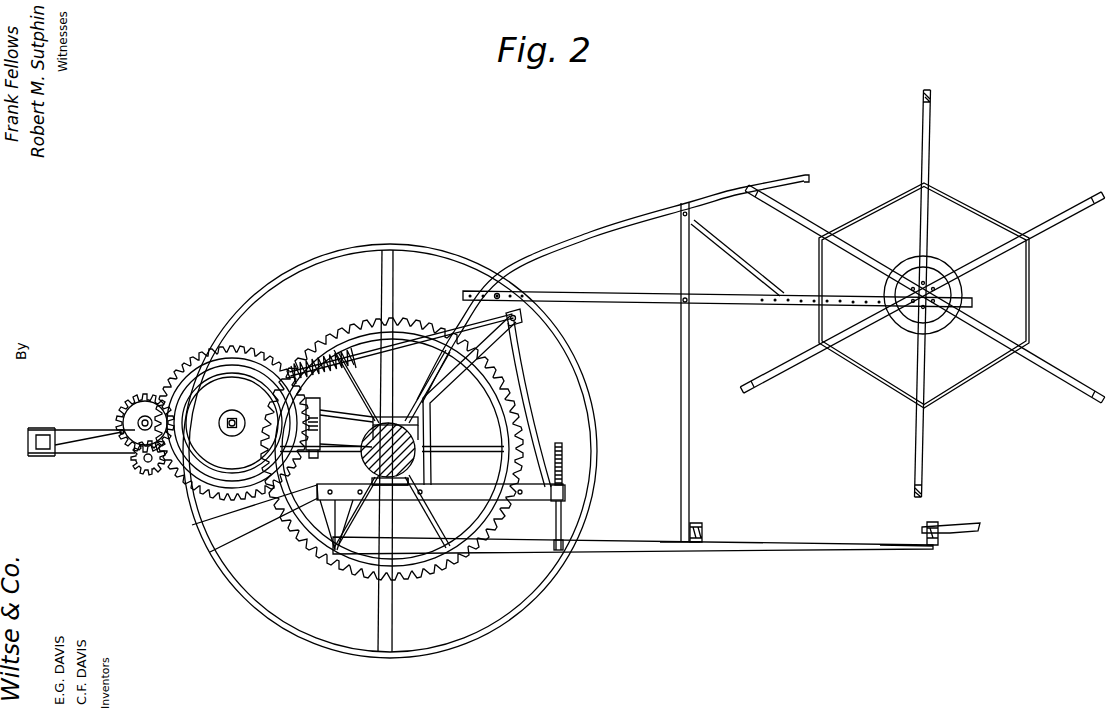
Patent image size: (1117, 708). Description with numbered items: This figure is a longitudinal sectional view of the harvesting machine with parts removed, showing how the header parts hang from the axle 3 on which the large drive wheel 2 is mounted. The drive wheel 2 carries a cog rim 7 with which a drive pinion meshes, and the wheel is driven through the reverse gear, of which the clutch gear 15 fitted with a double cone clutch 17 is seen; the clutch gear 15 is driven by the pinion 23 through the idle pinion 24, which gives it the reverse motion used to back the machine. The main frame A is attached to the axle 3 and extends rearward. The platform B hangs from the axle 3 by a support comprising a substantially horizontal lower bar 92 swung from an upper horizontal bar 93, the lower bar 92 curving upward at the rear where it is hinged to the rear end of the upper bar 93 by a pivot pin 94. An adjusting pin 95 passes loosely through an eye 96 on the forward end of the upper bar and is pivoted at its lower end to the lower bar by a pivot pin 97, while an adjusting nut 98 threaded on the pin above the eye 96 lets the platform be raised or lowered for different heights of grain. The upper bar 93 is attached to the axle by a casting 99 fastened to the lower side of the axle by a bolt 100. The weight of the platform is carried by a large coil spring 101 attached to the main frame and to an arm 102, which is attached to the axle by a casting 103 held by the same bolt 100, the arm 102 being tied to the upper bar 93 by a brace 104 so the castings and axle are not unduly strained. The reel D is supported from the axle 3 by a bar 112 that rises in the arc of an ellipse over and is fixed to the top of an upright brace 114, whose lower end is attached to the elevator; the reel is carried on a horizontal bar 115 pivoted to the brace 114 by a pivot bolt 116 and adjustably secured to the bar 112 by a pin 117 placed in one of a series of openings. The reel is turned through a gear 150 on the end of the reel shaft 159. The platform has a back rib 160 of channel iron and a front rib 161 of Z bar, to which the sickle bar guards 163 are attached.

The drive wheel 2 is at (351, 247).
The axle 3 is at (415, 447).
The cog rim 7 is at (425, 322).
The clutch gear 15 is at (200, 353).
The double cone clutch 17 is at (247, 452).
The pinion 23 is at (131, 395).
The idle pinion 24 is at (152, 476).
The main frame A is at (104, 454).
The platform B is at (848, 549).
The reel D is at (1066, 386).
The horizontal bar 92 is at (666, 552).
The upper horizontal bar 93 is at (488, 473).
The pivot pin 94 is at (322, 492).
The adjusting pin 95 is at (563, 453).
The eye 96 is at (566, 496).
The pivot pin 97 is at (560, 556).
The adjusting nut 98 is at (566, 490).
The casting 99 is at (388, 484).
The bolt 100 is at (387, 396).
The coil spring 101 is at (292, 354).
The arm 102 is at (505, 327).
The casting 103 is at (437, 404).
The brace 104 is at (527, 410).
The bar 112 is at (629, 222).
The upright brace 114 is at (690, 470).
The horizontal bar 115 is at (747, 304).
The pivot bolt 116 is at (683, 305).
The pin 117 is at (494, 292).
The gear 150 is at (946, 323).
The reel shaft 159 is at (932, 280).
The back rib 160 is at (704, 527).
The front rib 161 is at (944, 545).
The sickle bar guards 163 is at (982, 527).